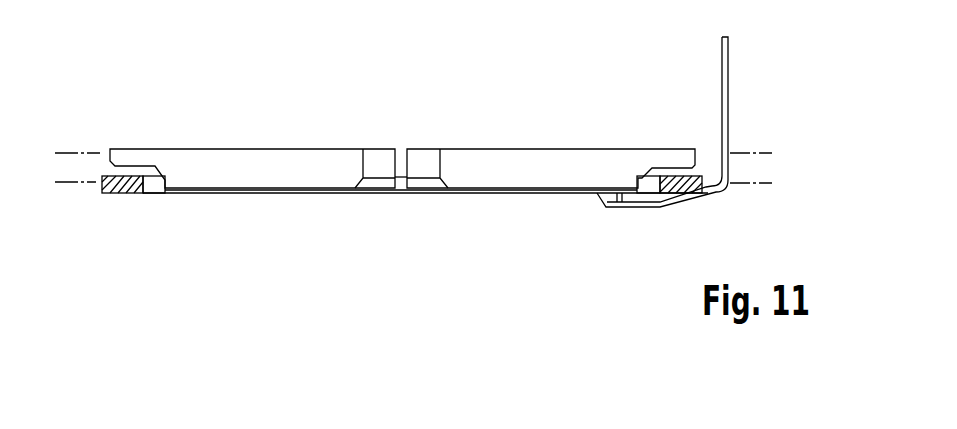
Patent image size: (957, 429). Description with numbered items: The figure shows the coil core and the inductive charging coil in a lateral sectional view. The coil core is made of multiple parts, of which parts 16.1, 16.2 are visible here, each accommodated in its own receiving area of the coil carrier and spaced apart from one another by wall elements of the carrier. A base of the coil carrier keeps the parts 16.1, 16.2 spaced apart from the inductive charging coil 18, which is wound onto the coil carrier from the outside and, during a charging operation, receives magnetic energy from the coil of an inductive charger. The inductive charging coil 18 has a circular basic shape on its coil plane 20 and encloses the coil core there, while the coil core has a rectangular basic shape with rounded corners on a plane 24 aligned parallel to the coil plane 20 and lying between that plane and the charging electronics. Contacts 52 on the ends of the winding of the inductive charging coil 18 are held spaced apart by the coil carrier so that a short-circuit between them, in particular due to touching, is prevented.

The part of coil core 16.1 is at (267, 165).
The part of coil core 16.2 is at (542, 167).
The inductive charging coil 18 is at (122, 192).
The coil plane 20 is at (764, 186).
The plane 24 is at (757, 152).
The contacts 52 is at (728, 54).